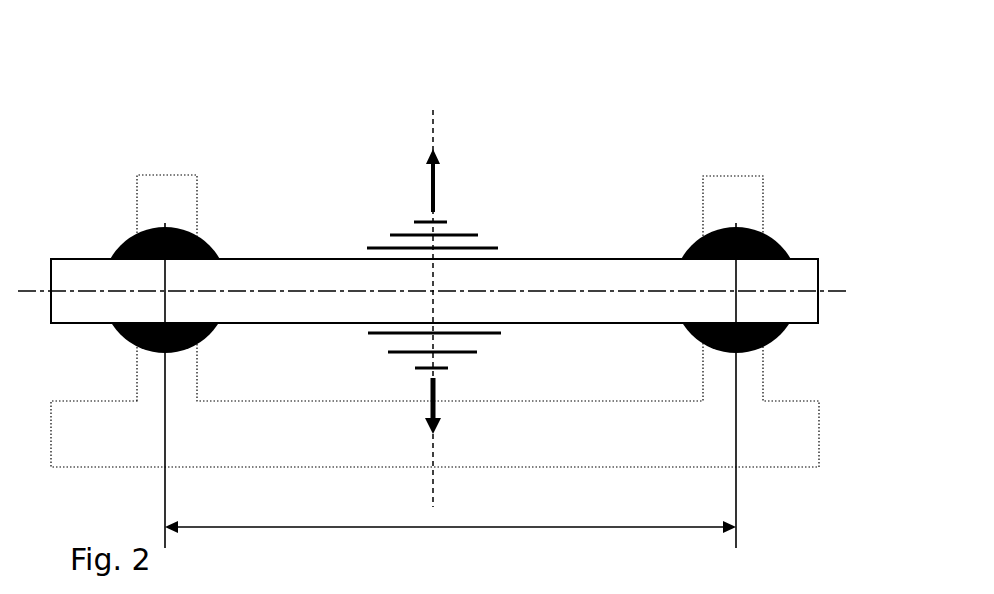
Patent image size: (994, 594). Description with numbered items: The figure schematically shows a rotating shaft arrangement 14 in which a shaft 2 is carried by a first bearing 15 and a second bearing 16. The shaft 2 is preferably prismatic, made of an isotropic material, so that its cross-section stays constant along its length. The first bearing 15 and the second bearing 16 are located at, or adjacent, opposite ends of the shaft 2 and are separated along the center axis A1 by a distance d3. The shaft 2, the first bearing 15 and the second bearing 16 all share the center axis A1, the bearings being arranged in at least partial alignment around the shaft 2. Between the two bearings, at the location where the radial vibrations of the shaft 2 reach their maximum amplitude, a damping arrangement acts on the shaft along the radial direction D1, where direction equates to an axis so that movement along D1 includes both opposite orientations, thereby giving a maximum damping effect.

The shaft 2 is at (562, 277).
The rotating shaft arrangement 14 is at (712, 103).
The first bearing 15 is at (230, 229).
The second bearing 16 is at (796, 214).
The center axis A1 is at (832, 291).
The radial direction D1 is at (433, 137).
The distance d3 is at (450, 514).